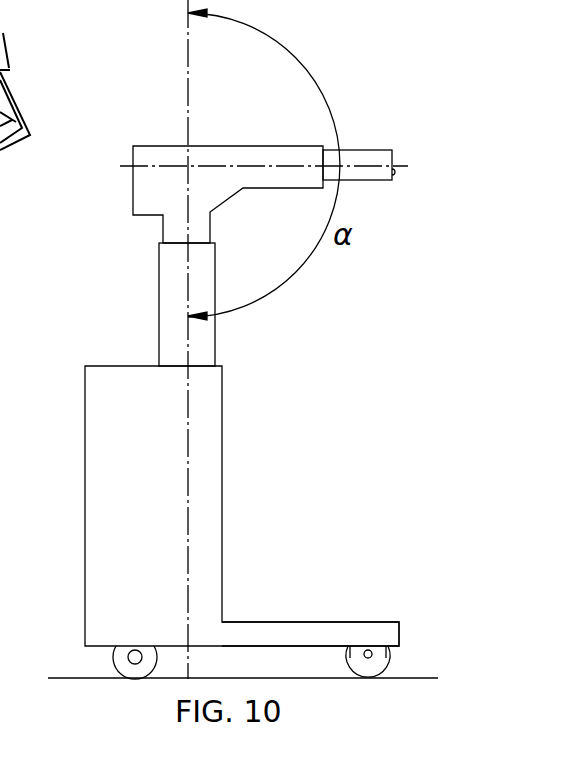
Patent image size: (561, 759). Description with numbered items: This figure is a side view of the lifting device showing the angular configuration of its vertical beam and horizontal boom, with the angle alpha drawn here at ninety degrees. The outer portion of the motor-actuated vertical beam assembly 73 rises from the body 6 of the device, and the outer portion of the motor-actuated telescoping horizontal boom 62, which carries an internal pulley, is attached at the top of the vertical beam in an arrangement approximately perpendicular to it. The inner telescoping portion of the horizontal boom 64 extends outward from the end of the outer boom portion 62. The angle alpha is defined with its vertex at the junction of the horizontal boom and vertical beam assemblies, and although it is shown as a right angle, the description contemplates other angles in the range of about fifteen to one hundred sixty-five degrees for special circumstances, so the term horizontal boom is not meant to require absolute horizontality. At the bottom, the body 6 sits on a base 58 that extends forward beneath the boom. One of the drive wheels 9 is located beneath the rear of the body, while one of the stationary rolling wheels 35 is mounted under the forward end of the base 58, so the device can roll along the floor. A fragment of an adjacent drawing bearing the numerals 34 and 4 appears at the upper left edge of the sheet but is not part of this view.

The adjacent figure fragment element 34 is at (0, 33).
The adjacent figure fragment element 4 is at (6, 196).
The outer portion of the motor-actuated telescoping horizontal boom 62 is at (256, 145).
The inner telescoping portion of the horizontal boom 64 is at (370, 149).
The outer portion of the motor-actuated vertical beam assembly 73 is at (158, 284).
The housing body 6 is at (98, 495).
The base plate 58 is at (272, 624).
The stationary (rolling) wheels 35 is at (353, 657).
The drive wheels 9 is at (118, 661).